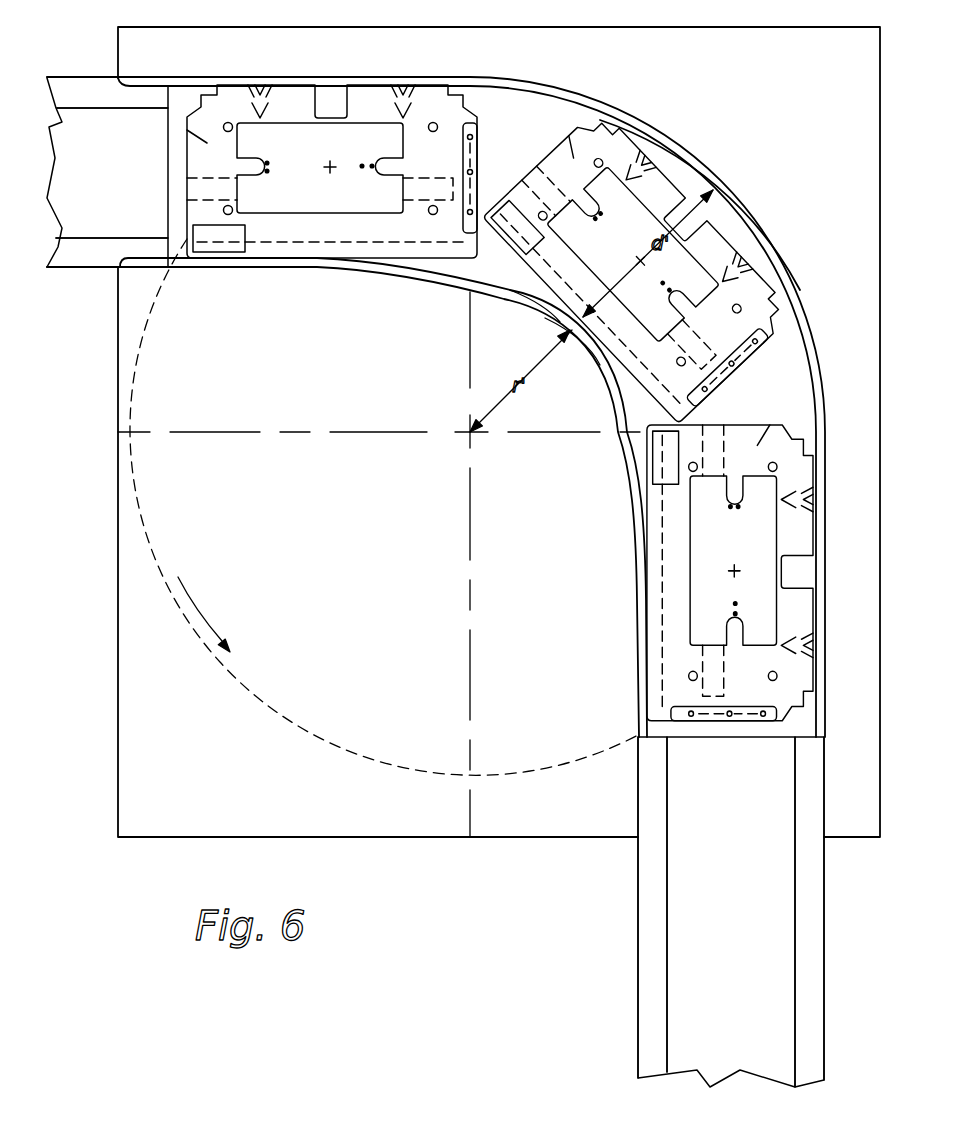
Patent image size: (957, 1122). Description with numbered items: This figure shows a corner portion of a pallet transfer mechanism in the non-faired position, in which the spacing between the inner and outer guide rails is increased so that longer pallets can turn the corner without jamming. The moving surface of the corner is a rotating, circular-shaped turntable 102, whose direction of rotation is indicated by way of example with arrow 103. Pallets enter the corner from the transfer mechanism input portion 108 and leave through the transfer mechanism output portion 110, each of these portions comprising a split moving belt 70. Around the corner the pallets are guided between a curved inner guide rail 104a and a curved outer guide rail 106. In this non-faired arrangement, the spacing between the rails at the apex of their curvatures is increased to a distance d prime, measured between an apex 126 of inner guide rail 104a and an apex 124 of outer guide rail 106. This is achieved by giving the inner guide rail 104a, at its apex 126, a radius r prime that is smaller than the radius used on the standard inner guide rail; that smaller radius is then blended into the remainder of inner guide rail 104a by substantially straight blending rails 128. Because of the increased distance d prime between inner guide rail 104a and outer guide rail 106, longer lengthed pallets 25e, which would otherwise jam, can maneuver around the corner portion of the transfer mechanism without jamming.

The longer lengthed pallet 25e is at (443, 80).
The split moving belt 70 is at (90, 98).
The transfer mechanism output portion 110 is at (131, 212).
The transfer mechanism input portion 108 is at (754, 794).
The turntable 102 is at (389, 698).
The arrow 103 is at (190, 592).
The inner guide rail 104a is at (552, 313).
The outer guide rail 106 is at (710, 170).
The apex of outer guide rail 124 is at (740, 183).
The apex of inner guide rail 126 is at (578, 350).
The blending rails 128 is at (385, 294).